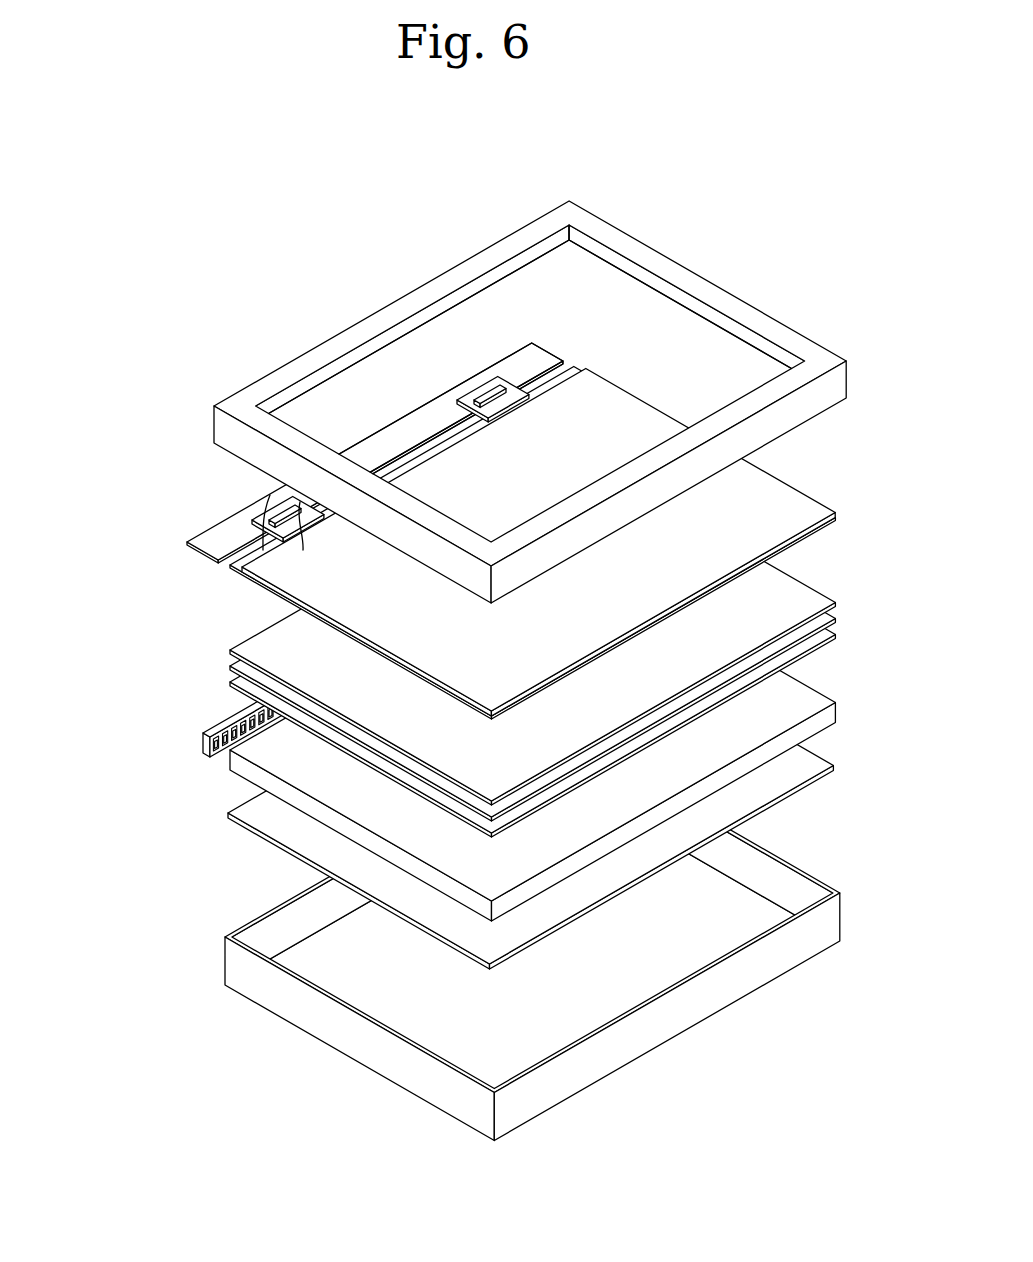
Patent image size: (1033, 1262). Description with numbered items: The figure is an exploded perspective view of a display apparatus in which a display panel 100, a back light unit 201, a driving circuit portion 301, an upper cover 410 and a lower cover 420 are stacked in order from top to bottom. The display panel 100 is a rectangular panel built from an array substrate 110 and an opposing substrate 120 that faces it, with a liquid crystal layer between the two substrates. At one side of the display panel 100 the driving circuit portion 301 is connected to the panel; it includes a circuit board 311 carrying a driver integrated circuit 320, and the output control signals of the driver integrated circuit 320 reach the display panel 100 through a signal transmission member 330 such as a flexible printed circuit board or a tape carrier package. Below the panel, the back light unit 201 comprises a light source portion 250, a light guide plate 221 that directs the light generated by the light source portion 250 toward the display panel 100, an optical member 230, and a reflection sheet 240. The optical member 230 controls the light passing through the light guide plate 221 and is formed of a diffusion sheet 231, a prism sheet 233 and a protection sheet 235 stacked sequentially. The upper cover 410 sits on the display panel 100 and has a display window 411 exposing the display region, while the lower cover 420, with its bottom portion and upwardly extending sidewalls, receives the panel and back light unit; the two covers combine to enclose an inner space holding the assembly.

The display panel 100 is at (335, 453).
The array substrate 110 is at (253, 519).
The opposing substrate 120 is at (287, 497).
The back light unit 201 is at (441, 711).
The light guide plate 221 is at (228, 752).
The optical member 230 is at (466, 645).
The diffusion sheet 231 is at (247, 678).
The prism sheet 233 is at (247, 665).
The protection sheet 235 is at (253, 647).
The reflection sheet 240 is at (262, 808).
The light source portion 250 is at (213, 728).
The driving circuit portion 301 is at (451, 310).
The circuit board 311 is at (442, 402).
The driver integrated circuit 320 is at (485, 390).
The signal transmission member 330 is at (510, 393).
The upper cover 410 is at (310, 348).
The display window 411 is at (615, 296).
The lower cover 420 is at (225, 959).